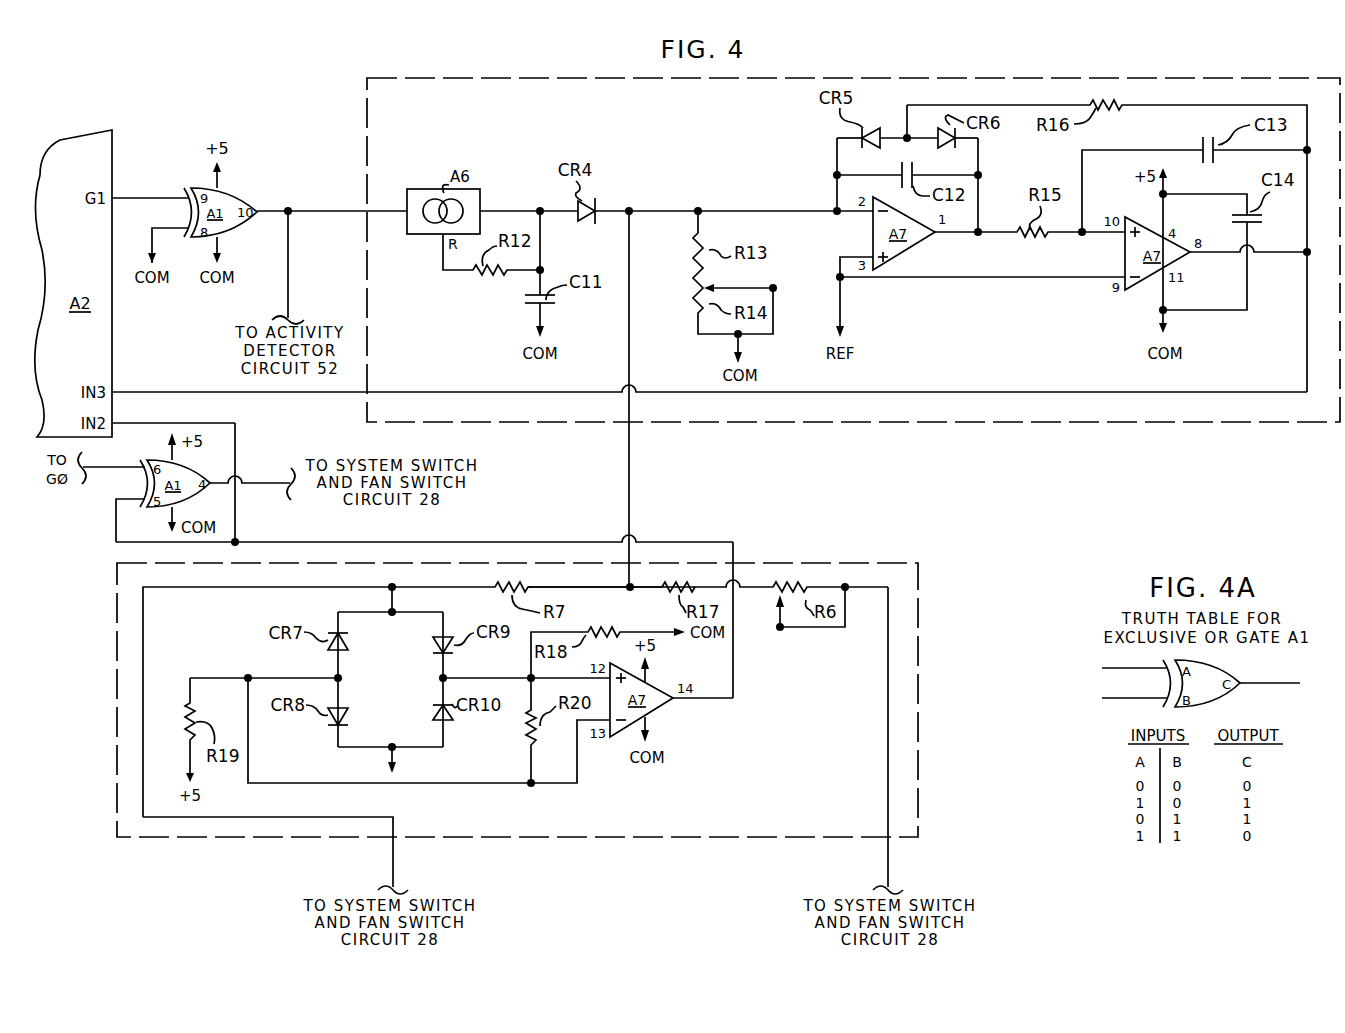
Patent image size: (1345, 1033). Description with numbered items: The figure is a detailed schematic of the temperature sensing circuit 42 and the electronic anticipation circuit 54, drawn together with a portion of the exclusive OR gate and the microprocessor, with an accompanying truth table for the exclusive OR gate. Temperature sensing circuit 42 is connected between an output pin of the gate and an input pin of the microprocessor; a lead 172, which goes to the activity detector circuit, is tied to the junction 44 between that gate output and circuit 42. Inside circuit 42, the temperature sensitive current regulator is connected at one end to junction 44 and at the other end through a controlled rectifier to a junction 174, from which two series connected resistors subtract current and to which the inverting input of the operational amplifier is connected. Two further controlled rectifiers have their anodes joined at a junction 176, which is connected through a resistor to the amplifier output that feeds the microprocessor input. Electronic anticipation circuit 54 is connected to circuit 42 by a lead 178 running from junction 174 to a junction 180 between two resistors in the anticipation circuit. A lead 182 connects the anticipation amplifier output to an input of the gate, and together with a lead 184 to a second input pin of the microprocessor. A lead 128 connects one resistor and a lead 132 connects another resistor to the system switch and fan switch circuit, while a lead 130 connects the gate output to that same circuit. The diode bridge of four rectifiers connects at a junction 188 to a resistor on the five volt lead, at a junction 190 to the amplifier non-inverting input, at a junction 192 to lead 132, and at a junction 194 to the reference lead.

The junction 44 is at (288, 206).
The lead 172 is at (288, 278).
The junction 174 is at (630, 205).
The junction 176 is at (906, 134).
The lead 178 is at (629, 474).
The junction 180 is at (630, 590).
The lead 182 is at (410, 546).
The lead 184 is at (235, 433).
The lead 130 is at (266, 478).
The junction 188 is at (336, 675).
The junction 190 is at (447, 676).
The junction 192 is at (398, 607).
The junction 194 is at (385, 752).
The lead 132 is at (283, 818).
The lead 128 is at (888, 732).
The temperature sensing circuit 42 is at (1106, 422).
The electronic anticipation circuit 54 is at (836, 557).